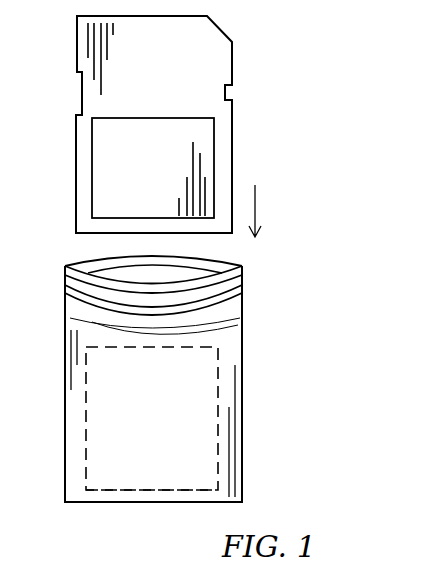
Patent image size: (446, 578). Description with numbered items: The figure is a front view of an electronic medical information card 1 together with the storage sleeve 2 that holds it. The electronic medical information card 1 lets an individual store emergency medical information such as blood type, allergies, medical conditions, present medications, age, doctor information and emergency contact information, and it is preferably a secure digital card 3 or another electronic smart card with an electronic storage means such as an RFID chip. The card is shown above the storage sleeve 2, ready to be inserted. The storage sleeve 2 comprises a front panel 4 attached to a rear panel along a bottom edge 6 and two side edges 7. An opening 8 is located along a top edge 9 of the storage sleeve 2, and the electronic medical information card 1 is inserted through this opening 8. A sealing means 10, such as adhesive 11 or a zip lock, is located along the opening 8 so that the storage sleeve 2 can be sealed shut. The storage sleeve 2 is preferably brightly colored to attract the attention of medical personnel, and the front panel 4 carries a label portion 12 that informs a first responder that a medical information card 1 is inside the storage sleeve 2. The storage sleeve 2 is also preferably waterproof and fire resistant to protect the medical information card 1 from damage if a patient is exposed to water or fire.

The electronic medical information card 1 is at (249, 137).
The storage sleeve 2 is at (263, 387).
The secure digital (SD) card 3 is at (162, 75).
The front panel 4 is at (80, 402).
The bottom edge 6 is at (172, 503).
The side edges 7 is at (63, 442).
The opening 8 is at (205, 262).
The top edge 9 is at (82, 273).
The sealing means 10 is at (203, 288).
The adhesive 11 is at (202, 313).
The label portion 12 is at (121, 491).